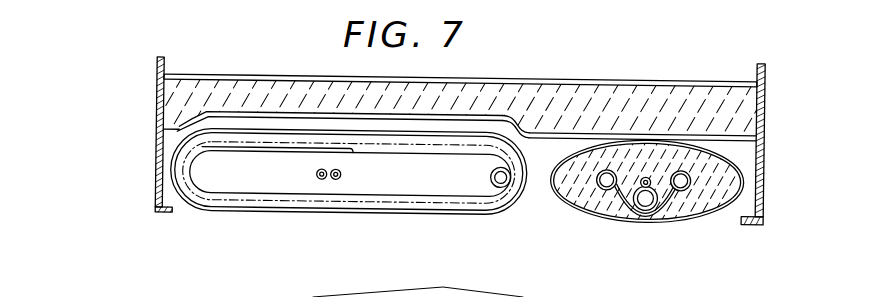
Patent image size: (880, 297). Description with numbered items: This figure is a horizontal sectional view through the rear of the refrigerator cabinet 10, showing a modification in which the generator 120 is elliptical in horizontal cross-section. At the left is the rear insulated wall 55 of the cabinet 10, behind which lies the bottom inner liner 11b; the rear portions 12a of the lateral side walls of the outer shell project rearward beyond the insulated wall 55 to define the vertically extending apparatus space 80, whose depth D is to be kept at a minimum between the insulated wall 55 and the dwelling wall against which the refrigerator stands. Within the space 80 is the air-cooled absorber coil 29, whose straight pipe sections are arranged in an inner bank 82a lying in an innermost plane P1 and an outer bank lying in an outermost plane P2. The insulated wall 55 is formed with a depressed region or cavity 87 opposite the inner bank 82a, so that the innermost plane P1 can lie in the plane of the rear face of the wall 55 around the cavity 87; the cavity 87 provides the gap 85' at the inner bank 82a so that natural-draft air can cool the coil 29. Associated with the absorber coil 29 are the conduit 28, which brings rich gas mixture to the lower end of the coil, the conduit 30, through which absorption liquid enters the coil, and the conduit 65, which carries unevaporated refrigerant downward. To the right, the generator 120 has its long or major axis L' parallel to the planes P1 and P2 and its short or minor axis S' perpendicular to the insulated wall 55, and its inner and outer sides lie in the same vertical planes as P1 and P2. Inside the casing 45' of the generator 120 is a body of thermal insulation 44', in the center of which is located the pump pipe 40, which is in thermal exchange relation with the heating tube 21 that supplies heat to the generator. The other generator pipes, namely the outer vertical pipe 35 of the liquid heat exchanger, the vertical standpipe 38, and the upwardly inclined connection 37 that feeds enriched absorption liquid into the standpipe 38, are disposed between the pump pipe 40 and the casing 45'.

The cabinet 10 is at (147, 68).
The apparatus space 80 is at (172, 192).
The rear portions of lateral side walls of outer shell 12a is at (157, 183).
The bottom inner liner 11b is at (320, 78).
The rear insulated wall 55 is at (180, 97).
The gap 85' is at (466, 91).
The cavity 87 is at (177, 126).
The innermost plane P1 is at (518, 135).
The inner bank 82a is at (413, 124).
The absorber coil 29 is at (394, 216).
The conduit 65 is at (343, 176).
The conduit 30 is at (318, 174).
The conduit 28 is at (493, 178).
The outermost plane P2 is at (531, 220).
The major axis L' is at (662, 161).
The depth D is at (797, 150).
The minor axis S' is at (667, 134).
The inclined connection 37 is at (576, 208).
The casing 45' is at (647, 206).
The body of thermal insulation 44' is at (659, 198).
The generator 120 is at (623, 232).
The standpipe 38 is at (607, 164).
The outer vertical pipe 35 is at (686, 166).
The pump pipe 40 is at (645, 184).
The heating tube 21 is at (641, 176).